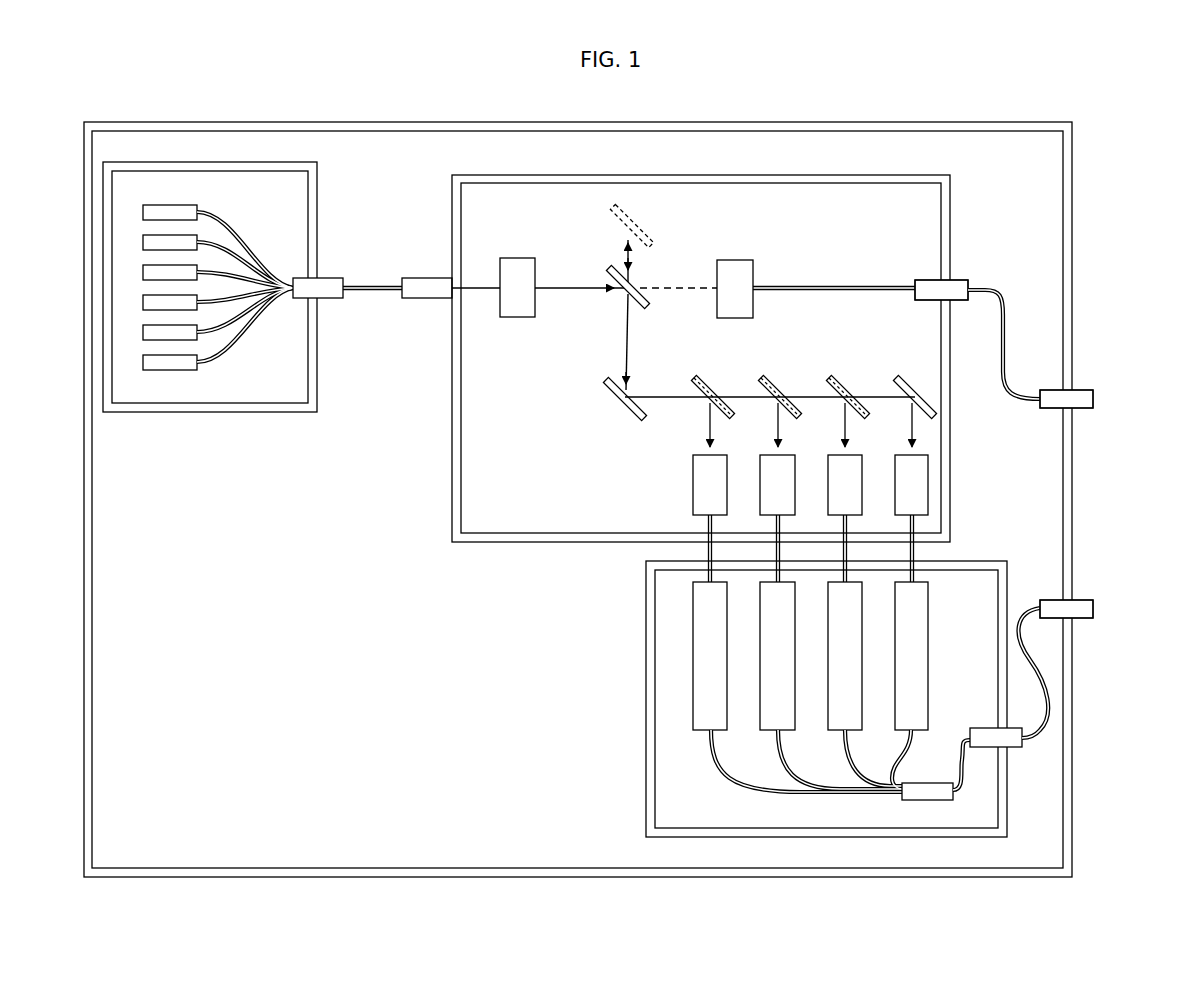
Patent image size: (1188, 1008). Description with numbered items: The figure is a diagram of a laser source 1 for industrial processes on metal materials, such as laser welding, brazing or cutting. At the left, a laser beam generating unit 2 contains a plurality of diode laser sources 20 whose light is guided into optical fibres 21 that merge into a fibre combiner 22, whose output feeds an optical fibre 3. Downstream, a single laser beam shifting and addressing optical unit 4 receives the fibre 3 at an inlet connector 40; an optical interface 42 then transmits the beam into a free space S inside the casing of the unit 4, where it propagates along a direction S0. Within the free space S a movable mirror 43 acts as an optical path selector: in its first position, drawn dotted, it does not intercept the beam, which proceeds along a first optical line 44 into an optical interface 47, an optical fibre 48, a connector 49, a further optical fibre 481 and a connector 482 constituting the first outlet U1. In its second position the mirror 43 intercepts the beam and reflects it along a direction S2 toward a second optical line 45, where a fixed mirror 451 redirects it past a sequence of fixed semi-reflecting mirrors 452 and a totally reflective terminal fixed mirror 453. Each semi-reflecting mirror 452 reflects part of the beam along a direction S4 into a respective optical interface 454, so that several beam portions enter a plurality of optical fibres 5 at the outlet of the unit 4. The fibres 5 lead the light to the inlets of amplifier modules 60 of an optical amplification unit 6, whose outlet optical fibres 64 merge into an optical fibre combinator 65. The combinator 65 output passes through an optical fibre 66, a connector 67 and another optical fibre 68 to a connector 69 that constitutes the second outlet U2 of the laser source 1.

The laser source 1 is at (1110, 160).
The laser beam generating unit 2 is at (250, 418).
The diode laser sources 20 is at (143, 242).
The optical fibres 21 is at (232, 272).
The fibre combiner 22 is at (326, 272).
The optical fibre 3 is at (382, 296).
The laser beam shifting and addressing optical unit 4 is at (448, 500).
The connector 40 is at (424, 278).
The optical interface 42 is at (515, 307).
The mirror 43 is at (648, 238).
The first optical line 44 is at (836, 282).
The second optical line 45 is at (645, 460).
The fixed mirror 451 is at (626, 421).
The fixed semi-reflecting mirrors 452 is at (725, 360).
The terminal fixed mirror 453 is at (914, 379).
The optical interfaces 454 is at (768, 477).
The optical interface 47 is at (740, 268).
The optical fibre 48 is at (884, 281).
The connector 49 is at (970, 280).
The optical fibre 481 is at (1004, 320).
The connector 482 is at (1080, 409).
The optical fibres 5 is at (704, 549).
The optical amplification unit 6 is at (640, 722).
The amplifier modules 60 is at (767, 632).
The outlet optical fibres 64 is at (766, 760).
The optical fibre combinator 65 is at (925, 800).
The optical fibre 66 is at (950, 740).
The connector 67 is at (1010, 748).
The optical fibre 68 is at (1046, 671).
The connector 69 is at (1090, 618).
The free space S is at (569, 220).
The direction S0 is at (594, 294).
The direction S2 is at (619, 352).
The direction S4 is at (845, 423).
The first outlet U1 is at (1103, 392).
The second outlet U2 is at (1104, 598).